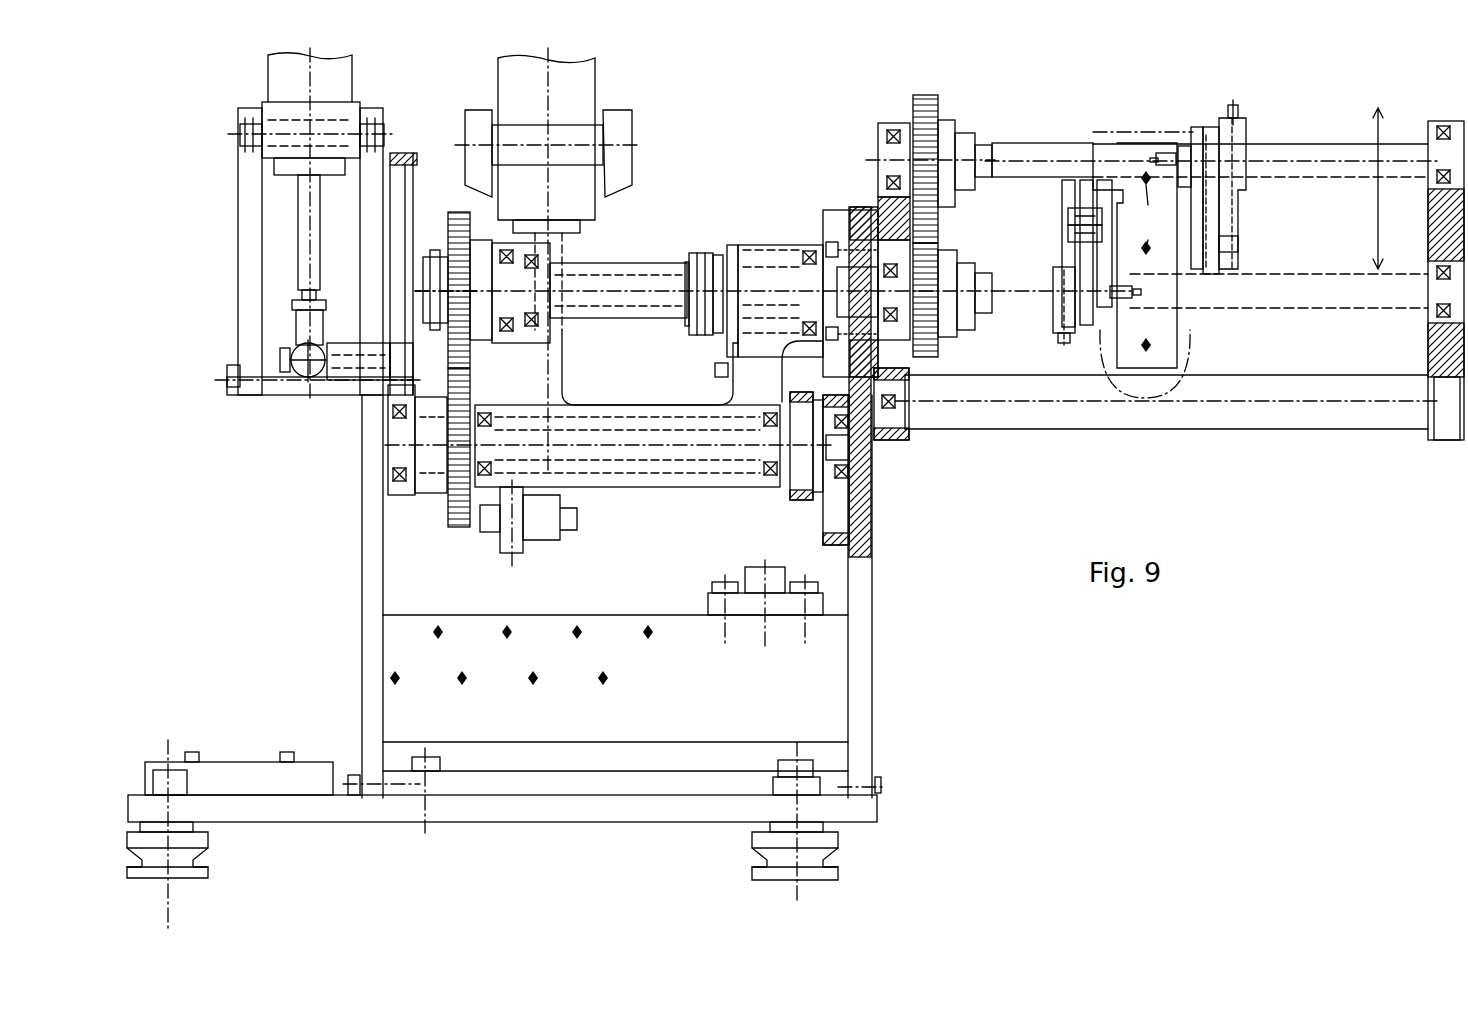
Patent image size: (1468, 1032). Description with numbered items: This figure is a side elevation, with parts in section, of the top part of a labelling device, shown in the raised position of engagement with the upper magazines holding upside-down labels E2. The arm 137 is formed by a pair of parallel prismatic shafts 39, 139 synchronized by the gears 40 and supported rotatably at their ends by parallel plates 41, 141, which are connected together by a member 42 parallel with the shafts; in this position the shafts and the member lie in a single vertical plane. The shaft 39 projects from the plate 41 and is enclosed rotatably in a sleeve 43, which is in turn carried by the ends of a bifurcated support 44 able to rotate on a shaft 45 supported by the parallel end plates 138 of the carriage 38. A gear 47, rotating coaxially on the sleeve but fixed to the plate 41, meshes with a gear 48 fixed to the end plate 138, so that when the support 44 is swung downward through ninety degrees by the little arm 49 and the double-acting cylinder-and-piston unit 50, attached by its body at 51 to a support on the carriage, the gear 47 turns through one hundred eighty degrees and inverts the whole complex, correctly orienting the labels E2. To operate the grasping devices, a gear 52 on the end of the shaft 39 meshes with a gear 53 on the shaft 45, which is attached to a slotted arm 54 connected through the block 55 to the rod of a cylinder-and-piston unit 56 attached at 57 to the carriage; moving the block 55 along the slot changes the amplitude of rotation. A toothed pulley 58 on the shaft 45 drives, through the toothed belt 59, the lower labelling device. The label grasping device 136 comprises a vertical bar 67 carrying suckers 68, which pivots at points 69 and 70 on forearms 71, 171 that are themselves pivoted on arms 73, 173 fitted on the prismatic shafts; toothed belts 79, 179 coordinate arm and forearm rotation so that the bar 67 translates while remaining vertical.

The carriage 38 is at (895, 774).
The prismatic shaft 39 is at (775, 275).
The gears 40 is at (932, 247).
The parallel plate 41 is at (887, 123).
The member 42 is at (1382, 440).
The sleeve 43 is at (613, 267).
The bifurcated support 44 is at (628, 395).
The shaft 45 is at (868, 455).
The gear 47 is at (828, 213).
The gear 48 is at (870, 545).
The little arm 49 is at (520, 537).
The double-acting cylinder-and-piston unit 50 is at (512, 80).
The attachment point of cylinder body 51 is at (605, 140).
The gear 52 is at (452, 212).
The gear 53 is at (455, 530).
The slotted arm 54 is at (400, 152).
The block 55 is at (385, 378).
The cylinder-and-piston unit 56 is at (346, 80).
The attachment point of cylinder-and-piston unit 57 is at (260, 137).
The toothed pulley 58 is at (770, 485).
The toothed belt 59 is at (805, 498).
The vertical bar 67 is at (1125, 140).
The suckers 68 is at (1218, 343).
The pivot point 69 is at (1163, 153).
The pivot point 70 is at (1108, 345).
The forearm 71 is at (1225, 240).
The arm 73 is at (1240, 115).
The toothed belt 79 is at (1235, 206).
The label grasping device 136 is at (1188, 112).
The arm 137 is at (1380, 172).
The end plate 138 is at (362, 588).
The prismatic shaft 139 is at (1325, 140).
The parallel plate 141 is at (1437, 120).
The forearm 171 is at (1095, 177).
The arm 173 is at (1055, 323).
The toothed belt 179 is at (1082, 257).
The upside-down labels E2 is at (1100, 130).